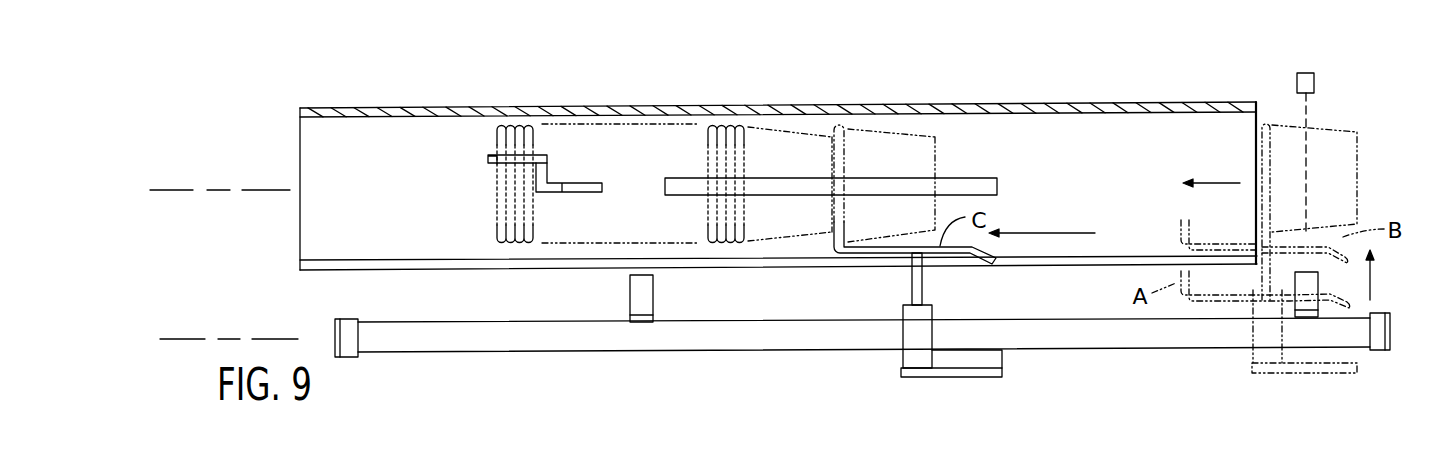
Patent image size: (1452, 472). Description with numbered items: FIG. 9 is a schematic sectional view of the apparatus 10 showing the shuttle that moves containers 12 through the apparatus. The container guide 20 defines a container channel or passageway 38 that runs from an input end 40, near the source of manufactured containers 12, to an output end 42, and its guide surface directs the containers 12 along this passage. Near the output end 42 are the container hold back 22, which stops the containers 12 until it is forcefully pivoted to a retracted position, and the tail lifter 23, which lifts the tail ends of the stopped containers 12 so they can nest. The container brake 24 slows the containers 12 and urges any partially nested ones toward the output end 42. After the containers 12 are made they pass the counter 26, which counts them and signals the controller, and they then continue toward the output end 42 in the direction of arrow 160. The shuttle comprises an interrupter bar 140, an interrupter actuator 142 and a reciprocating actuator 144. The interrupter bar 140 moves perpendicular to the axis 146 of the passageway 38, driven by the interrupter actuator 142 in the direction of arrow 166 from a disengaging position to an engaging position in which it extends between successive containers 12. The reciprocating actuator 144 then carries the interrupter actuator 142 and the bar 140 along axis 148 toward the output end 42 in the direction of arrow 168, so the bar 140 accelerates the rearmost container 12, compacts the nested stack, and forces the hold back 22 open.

The apparatus 10 is at (743, 159).
The containers 12 is at (1337, 128).
The container guide 20 is at (946, 98).
The container hold back 22 is at (492, 159).
The tail lifter 23 is at (585, 186).
The container brake 24 is at (966, 180).
The counter 26 is at (1315, 83).
The container channel or passageway 38 is at (743, 159).
The input end 40 is at (1251, 97).
The output end 42 is at (306, 100).
The interrupter bar 140 is at (1178, 232).
The interrupter actuator 142 is at (1243, 311).
The reciprocating actuator 144 is at (1357, 349).
The axis of passage 146 is at (170, 190).
The axis 148 is at (185, 339).
The arrow 160 is at (1222, 183).
The arrow 166 is at (1372, 278).
The arrow 168 is at (1083, 222).